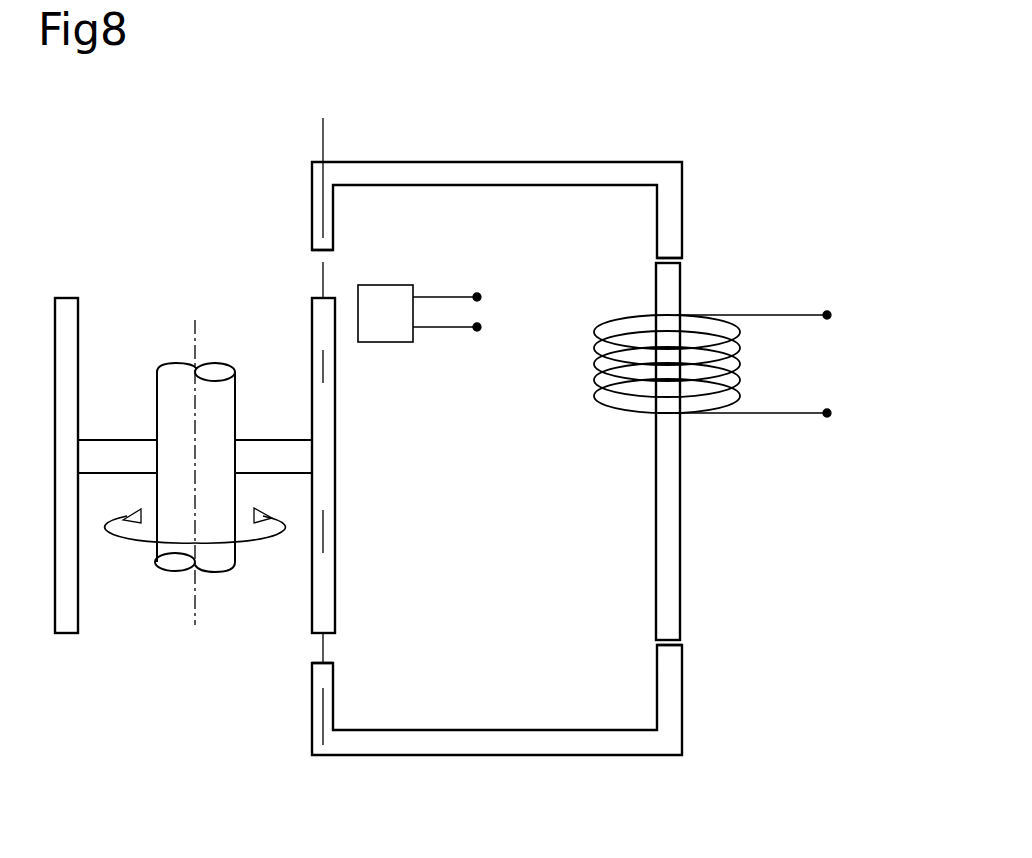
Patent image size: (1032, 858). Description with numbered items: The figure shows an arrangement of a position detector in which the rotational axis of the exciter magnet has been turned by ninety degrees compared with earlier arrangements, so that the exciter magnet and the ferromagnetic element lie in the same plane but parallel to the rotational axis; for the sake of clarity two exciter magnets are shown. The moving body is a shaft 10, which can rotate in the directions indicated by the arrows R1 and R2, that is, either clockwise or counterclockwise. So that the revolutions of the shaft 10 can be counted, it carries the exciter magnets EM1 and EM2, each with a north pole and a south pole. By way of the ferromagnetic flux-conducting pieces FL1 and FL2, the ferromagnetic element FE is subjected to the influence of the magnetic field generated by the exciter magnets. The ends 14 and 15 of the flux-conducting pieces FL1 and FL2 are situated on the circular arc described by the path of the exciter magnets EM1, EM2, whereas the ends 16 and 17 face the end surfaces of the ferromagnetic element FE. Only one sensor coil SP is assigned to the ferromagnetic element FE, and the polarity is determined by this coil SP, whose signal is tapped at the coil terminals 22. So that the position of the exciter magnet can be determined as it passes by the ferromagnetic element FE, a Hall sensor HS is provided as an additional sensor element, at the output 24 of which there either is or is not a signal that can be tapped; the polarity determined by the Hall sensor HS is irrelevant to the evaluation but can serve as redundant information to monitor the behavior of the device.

The shaft 10 is at (207, 422).
The end of flux-conducting piece 14 is at (317, 245).
The end of flux-conducting piece 15 is at (317, 667).
The end of flux-conducting piece 16 is at (673, 257).
The end of flux-conducting piece 17 is at (665, 647).
The coil terminals 22 is at (833, 325).
The output of Hall sensor 24 is at (483, 300).
The exciter magnet EM1 is at (323, 405).
The exciter magnet EM2 is at (67, 383).
The flux-conducting piece FL1 is at (603, 172).
The flux-conducting piece FL2 is at (607, 740).
The ferromagnetic element FE is at (665, 497).
The sensor coil SP is at (737, 365).
The Hall sensor HS is at (404, 327).
The rotation direction R1 is at (147, 547).
The rotation direction R2 is at (245, 546).